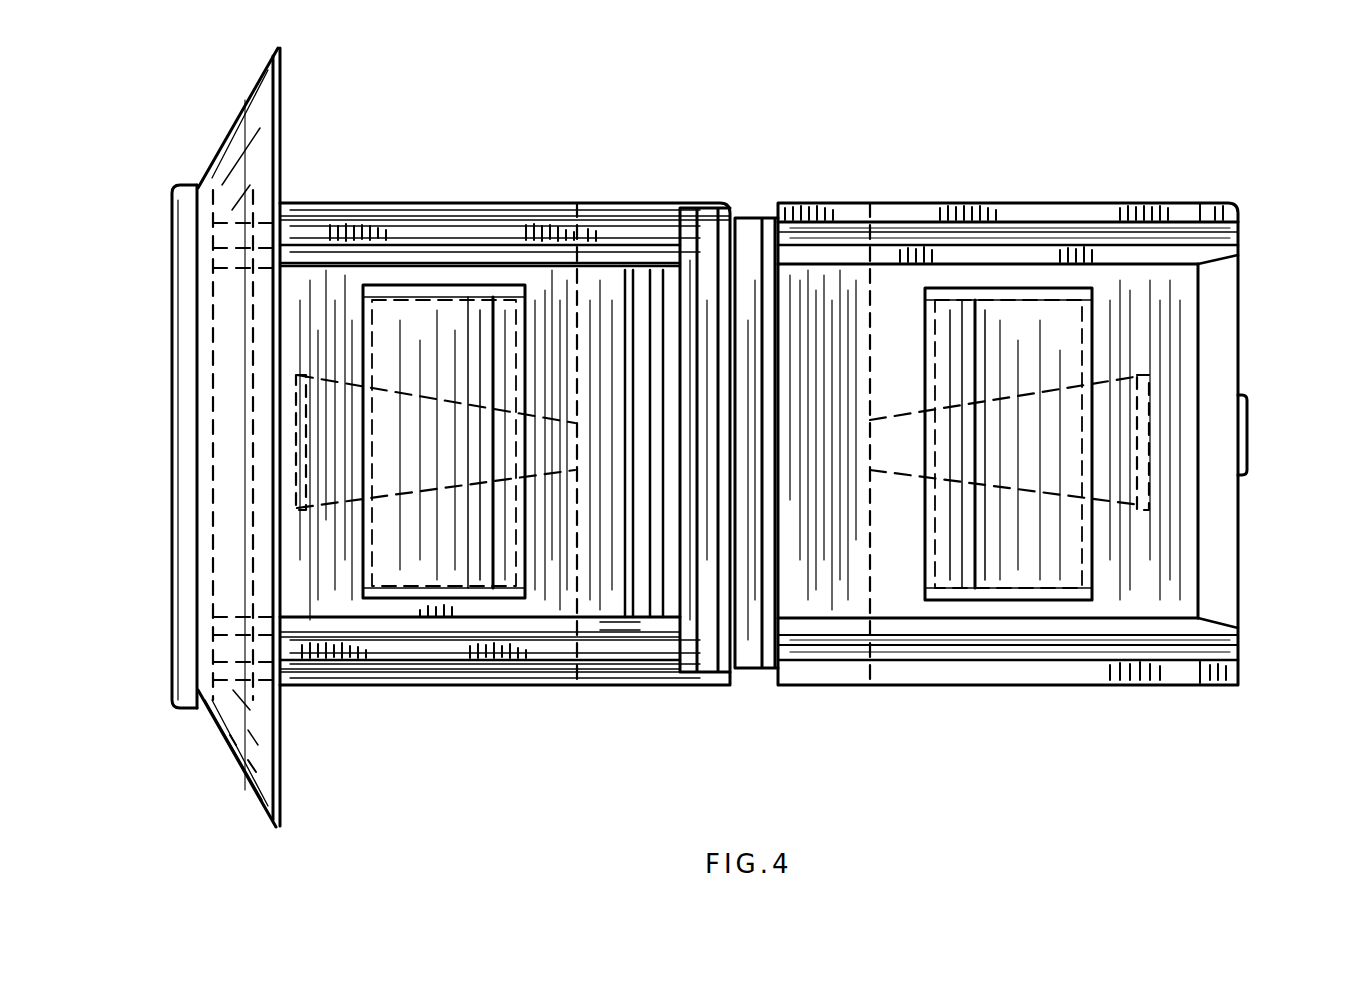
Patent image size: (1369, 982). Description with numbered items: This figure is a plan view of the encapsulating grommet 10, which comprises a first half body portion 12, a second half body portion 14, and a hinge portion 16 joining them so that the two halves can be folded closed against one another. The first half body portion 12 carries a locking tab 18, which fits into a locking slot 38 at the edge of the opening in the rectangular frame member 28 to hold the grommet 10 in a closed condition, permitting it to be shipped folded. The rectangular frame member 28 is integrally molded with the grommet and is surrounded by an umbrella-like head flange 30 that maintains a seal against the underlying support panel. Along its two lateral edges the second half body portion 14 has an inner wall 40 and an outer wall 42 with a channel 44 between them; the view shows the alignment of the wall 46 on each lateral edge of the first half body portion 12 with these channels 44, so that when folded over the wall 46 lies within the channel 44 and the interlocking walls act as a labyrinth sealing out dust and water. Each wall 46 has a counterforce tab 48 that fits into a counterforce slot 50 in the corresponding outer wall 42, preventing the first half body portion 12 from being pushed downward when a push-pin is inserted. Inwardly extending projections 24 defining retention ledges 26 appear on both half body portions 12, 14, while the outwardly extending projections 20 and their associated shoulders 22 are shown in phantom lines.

The encapsulating grommet 10 is at (799, 130).
The first half body portion 12 is at (1012, 668).
The second half body portion 14 is at (461, 676).
The hinge portion 16 is at (752, 652).
The locking tab 18 is at (1248, 436).
The outwardly extending projection 20 is at (1118, 493).
The shoulder 22 is at (1146, 490).
The inwardly extending projection 24 is at (1036, 306).
The retention ledge 26 is at (972, 300).
The rectangular frame member 28 is at (175, 552).
The head flange 30 is at (232, 742).
The locking slot 38 is at (180, 432).
The inner wall 40 is at (638, 622).
The outer wall 42 is at (330, 215).
The channel 44 is at (395, 240).
The wall 46 is at (1222, 236).
The counterforce tab 48 is at (1218, 205).
The counterforce slot 50 is at (235, 202).